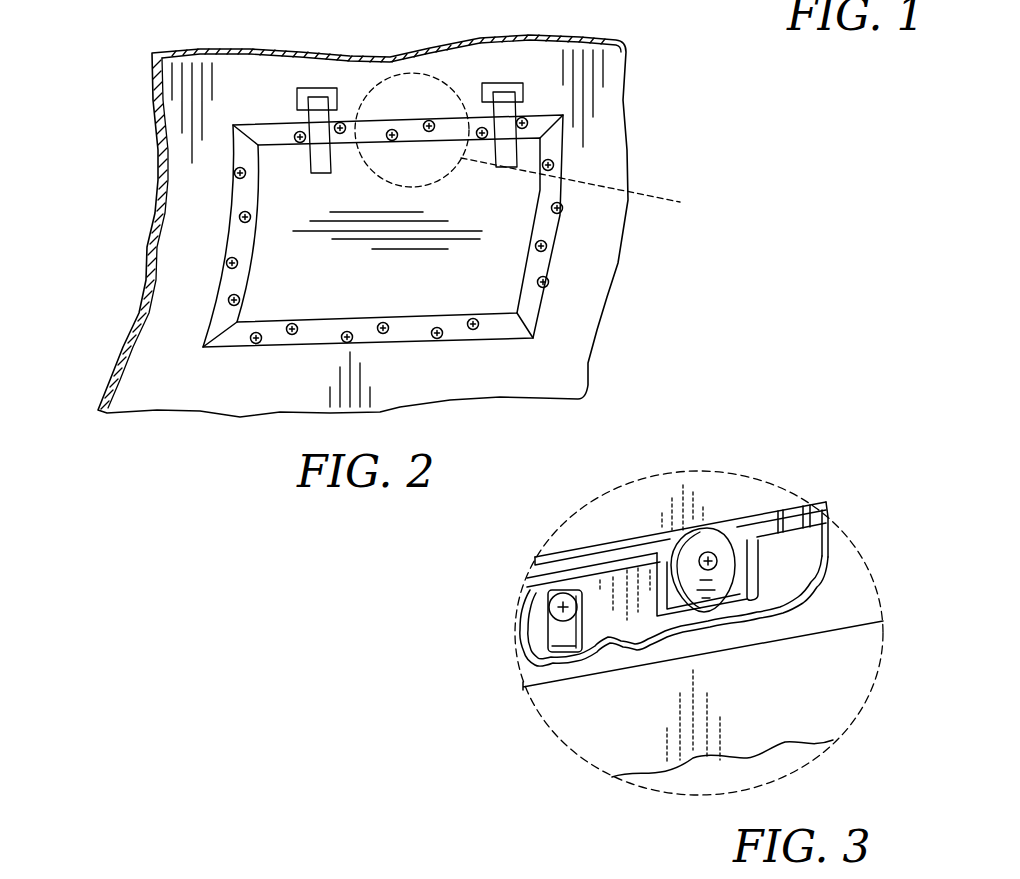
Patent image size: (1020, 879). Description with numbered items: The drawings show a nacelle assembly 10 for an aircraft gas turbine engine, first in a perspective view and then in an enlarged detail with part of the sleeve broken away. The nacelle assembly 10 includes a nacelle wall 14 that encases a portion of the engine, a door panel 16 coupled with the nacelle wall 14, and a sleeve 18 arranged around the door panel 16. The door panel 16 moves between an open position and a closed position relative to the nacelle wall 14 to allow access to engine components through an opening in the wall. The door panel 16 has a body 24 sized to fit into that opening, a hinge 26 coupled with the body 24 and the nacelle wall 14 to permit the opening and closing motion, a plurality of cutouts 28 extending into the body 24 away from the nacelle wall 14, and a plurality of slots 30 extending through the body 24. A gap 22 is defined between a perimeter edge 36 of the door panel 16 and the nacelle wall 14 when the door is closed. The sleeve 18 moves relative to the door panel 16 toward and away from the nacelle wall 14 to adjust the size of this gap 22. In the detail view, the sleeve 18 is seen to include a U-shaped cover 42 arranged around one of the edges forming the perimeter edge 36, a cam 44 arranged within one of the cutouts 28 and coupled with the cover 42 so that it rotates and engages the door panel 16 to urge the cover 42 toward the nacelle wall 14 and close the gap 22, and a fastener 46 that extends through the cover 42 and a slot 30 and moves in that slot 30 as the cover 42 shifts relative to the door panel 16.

In FIG. 2, the nacelle assembly 10 is at (91, 73).
In FIG. 2, the nacelle wall 14 is at (147, 172).
In FIG. 3, the nacelle wall 14 is at (642, 515).
In FIG. 2, the door panel 16 is at (553, 190).
In FIG. 3, the door panel 16 is at (658, 799).
In FIG. 2, the sleeve 18 is at (262, 110).
In FIG. 3, the sleeve 18 is at (834, 509).
In FIG. 3, the gap 22 is at (593, 544).
In FIG. 2, the body 24 is at (496, 262).
In FIG. 3, the body 24 is at (606, 736).
In FIG. 2, the hinge 26 is at (540, 90).
In FIG. 3, the cutouts 28 is at (769, 574).
In FIG. 3, the slots 30 is at (560, 632).
In FIG. 3, the perimeter edge 36 is at (781, 526).
In FIG. 3, the U-shaped cover 42 is at (862, 591).
In FIG. 3, the cam 44 is at (722, 526).
In FIG. 3, the fastener 46 is at (560, 603).